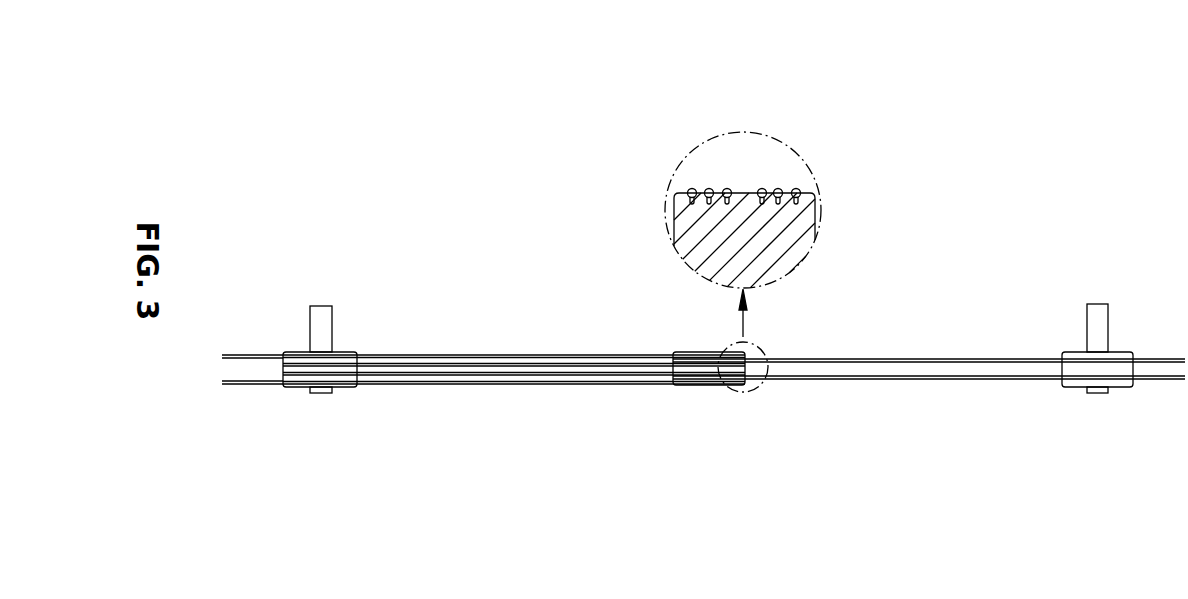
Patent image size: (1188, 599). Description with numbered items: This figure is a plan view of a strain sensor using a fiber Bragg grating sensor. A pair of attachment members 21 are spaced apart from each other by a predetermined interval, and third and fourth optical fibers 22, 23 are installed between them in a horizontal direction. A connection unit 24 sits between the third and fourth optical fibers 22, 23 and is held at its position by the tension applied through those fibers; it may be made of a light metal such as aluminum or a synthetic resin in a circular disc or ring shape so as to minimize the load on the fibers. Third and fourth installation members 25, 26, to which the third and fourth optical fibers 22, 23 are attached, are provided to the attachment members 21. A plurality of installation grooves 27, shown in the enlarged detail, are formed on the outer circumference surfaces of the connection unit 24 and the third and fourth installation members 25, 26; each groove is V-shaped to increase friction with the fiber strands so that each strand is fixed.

The attachment member 21 is at (308, 328).
The third optical fiber 22 is at (830, 382).
The fourth optical fiber 23 is at (588, 382).
The connection unit 24 is at (697, 387).
The third installation member 25 is at (1073, 388).
The fourth installation member 26 is at (343, 387).
The installation groove 27 is at (761, 200).